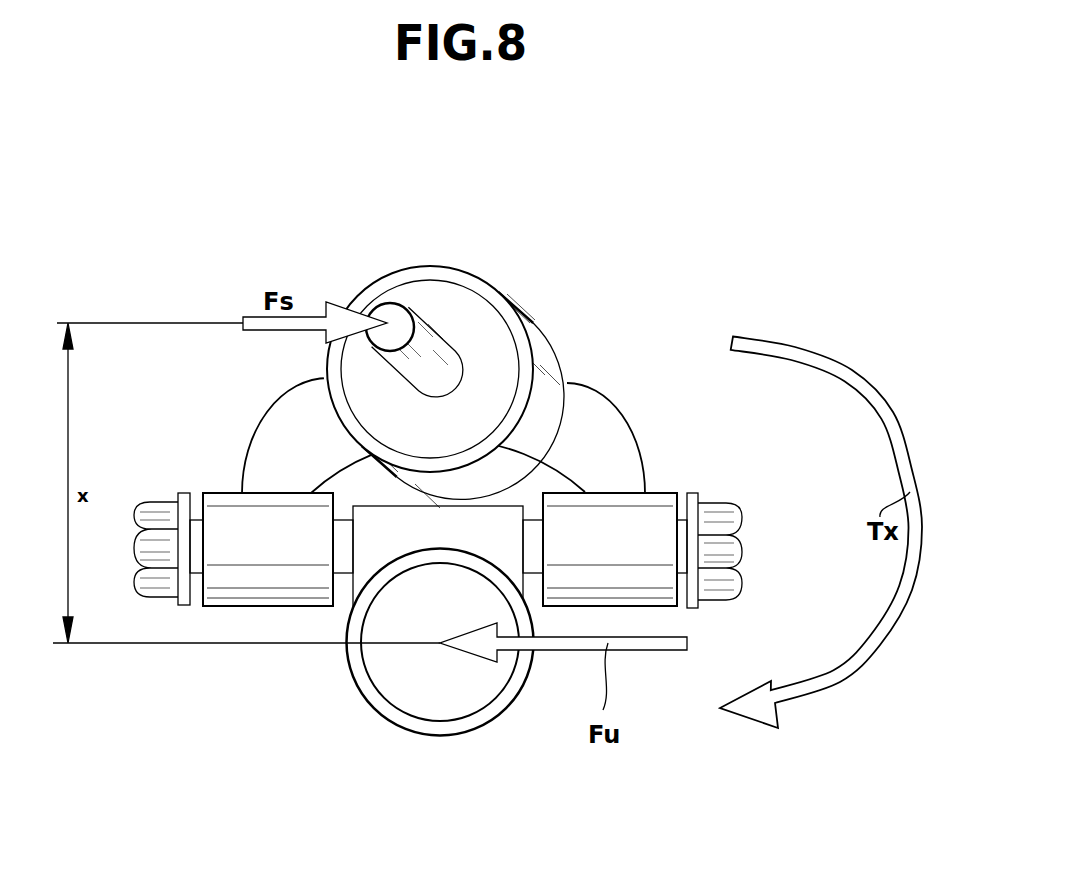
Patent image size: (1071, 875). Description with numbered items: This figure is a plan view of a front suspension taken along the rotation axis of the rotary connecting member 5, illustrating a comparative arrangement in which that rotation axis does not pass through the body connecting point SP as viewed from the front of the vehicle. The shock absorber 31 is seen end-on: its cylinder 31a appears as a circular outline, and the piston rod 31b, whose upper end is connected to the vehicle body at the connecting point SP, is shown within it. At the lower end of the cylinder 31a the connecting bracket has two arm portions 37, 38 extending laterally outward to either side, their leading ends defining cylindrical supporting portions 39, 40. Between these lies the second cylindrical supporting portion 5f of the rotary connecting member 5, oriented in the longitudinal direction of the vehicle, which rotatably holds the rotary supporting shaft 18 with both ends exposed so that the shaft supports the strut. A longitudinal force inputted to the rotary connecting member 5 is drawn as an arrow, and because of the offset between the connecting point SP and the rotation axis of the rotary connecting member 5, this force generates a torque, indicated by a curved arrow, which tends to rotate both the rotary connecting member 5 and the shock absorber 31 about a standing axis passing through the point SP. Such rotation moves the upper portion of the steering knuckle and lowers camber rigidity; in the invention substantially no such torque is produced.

The rotary connecting member 5 is at (350, 682).
The second cylindrical supporting portion 5f is at (365, 547).
The rotary supporting shaft 18 is at (160, 512).
The shock absorber 31 is at (485, 333).
The cylinder 31a is at (550, 372).
The piston rod 31b is at (425, 347).
The arm portion 37 is at (270, 418).
The arm portion 38 is at (598, 438).
The cylindrical supporting portion 39 is at (265, 540).
The cylindrical supporting portion 40 is at (614, 543).
The body connecting point SP is at (393, 311).